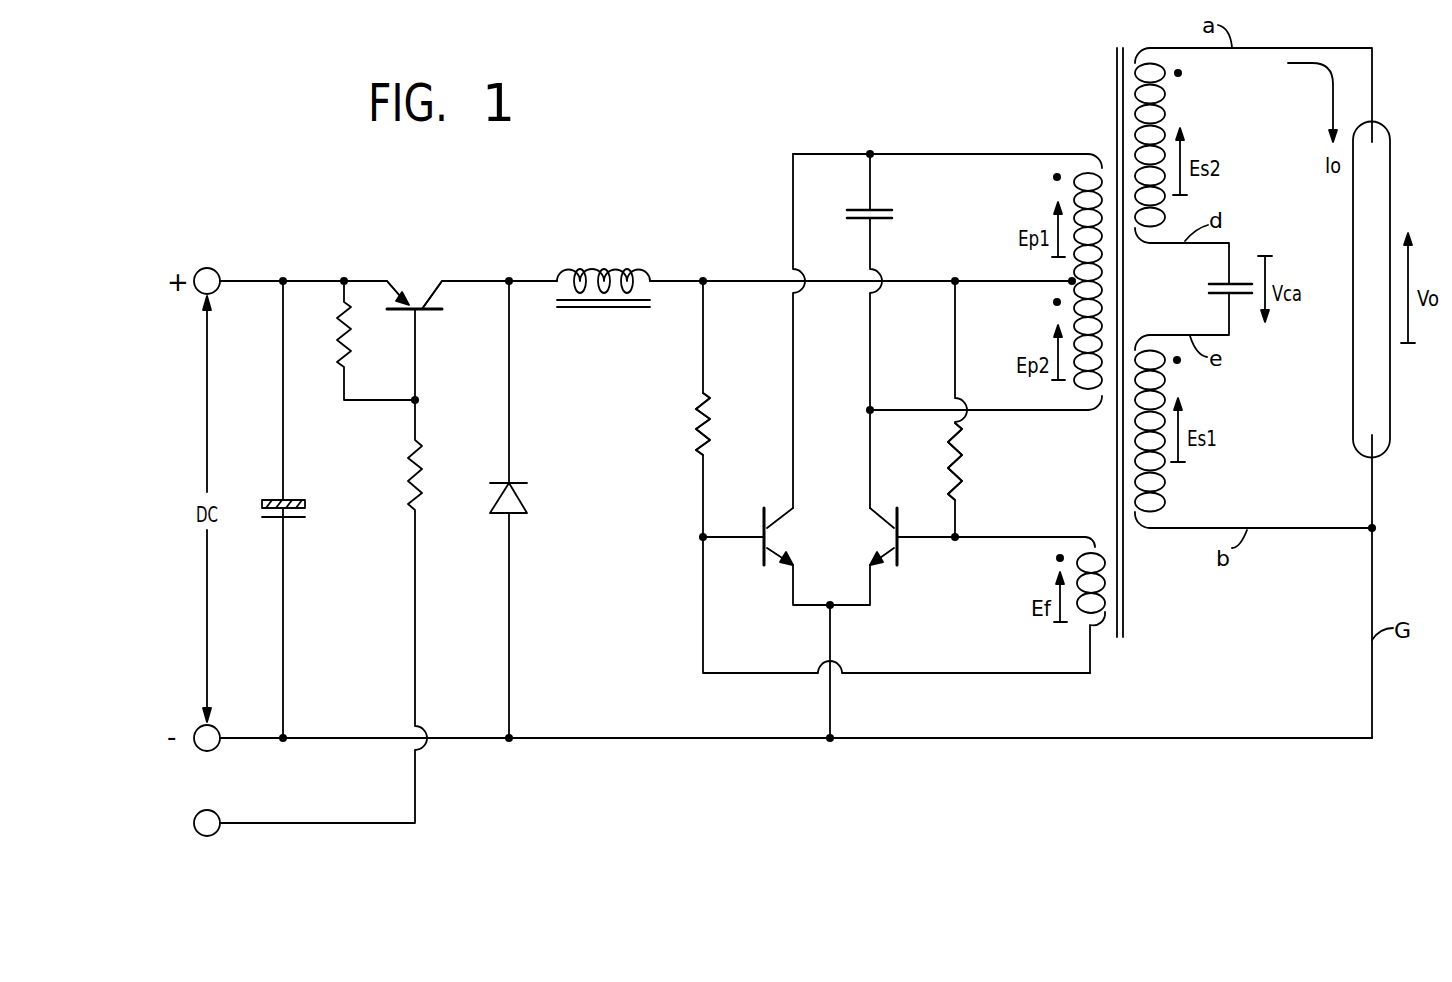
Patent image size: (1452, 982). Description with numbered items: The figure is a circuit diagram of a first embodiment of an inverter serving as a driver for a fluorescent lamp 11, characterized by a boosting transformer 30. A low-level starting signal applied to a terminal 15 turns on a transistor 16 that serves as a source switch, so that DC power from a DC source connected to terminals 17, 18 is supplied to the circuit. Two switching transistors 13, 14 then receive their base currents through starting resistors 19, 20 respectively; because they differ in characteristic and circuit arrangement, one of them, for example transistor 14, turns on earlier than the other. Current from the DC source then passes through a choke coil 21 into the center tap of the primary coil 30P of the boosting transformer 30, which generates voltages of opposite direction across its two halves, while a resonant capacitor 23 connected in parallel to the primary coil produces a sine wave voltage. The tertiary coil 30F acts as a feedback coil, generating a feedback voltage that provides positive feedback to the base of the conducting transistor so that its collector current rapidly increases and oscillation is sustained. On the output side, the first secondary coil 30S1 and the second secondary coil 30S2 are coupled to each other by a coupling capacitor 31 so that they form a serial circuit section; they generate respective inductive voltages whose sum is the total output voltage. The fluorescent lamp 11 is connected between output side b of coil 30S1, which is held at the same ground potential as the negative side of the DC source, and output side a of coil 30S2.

The fluorescent lamp 11 is at (1392, 173).
The transistor 13 is at (762, 557).
The transistor 14 is at (898, 557).
The terminal 15 is at (197, 835).
The transistor 16 is at (417, 282).
The terminal 17 is at (200, 269).
The terminal 18 is at (197, 750).
The starting resistor 19 is at (697, 417).
The starting resistor 20 is at (960, 480).
The choke coil 21 is at (612, 263).
The resonant capacitor 23 is at (892, 213).
The boosting transformer 30 is at (1117, 83).
The primary coil 30P is at (1080, 170).
The first secondary coil 30S1 is at (1163, 508).
The second secondary coil 30S2 is at (1165, 97).
The tertiary coil 30F is at (1093, 627).
The coupling capacitor 31 is at (1208, 288).